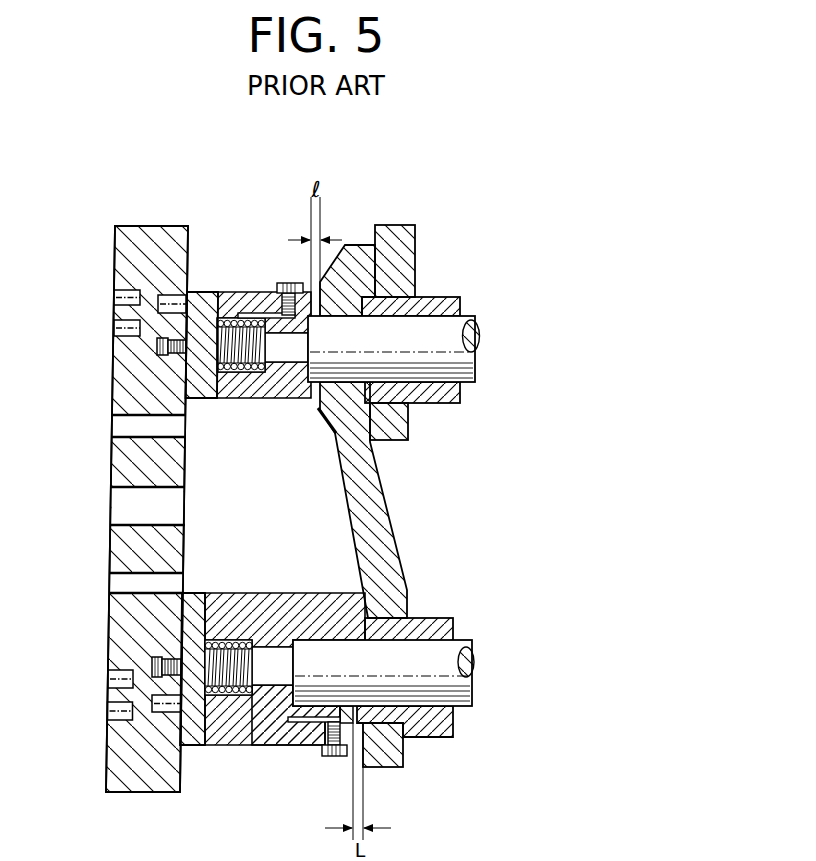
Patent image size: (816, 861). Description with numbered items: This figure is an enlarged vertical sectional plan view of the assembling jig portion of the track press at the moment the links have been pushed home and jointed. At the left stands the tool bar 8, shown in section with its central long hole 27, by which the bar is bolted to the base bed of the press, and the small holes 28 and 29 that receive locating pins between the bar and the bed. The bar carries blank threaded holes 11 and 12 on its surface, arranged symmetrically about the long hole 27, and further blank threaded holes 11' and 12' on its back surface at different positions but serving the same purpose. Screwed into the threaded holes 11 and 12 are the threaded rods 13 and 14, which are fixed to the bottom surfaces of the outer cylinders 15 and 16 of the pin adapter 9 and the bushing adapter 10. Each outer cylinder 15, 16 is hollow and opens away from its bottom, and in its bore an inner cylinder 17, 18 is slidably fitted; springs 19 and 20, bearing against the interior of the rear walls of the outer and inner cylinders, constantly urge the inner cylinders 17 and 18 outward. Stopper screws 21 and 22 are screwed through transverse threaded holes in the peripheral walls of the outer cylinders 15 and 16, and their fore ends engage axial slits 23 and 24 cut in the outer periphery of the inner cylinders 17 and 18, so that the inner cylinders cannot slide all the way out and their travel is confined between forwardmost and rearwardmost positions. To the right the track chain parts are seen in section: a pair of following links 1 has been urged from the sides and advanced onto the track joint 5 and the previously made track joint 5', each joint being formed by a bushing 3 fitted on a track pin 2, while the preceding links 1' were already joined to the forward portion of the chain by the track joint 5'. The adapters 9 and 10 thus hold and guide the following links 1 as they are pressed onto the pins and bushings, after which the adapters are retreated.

The following links 1 is at (381, 484).
The preceding links 1' is at (419, 332).
The track pin 2 is at (448, 347).
The bushing 3 is at (441, 401).
The track joint 5 is at (430, 596).
The track joint 5' is at (448, 300).
The tool bar 8 is at (148, 228).
The pin adapter 9 is at (201, 291).
The bushing adapter 10 is at (205, 588).
The threaded hole 11 is at (132, 345).
The threaded hole 11' is at (90, 313).
The threaded hole 12 is at (125, 665).
The threaded hole 12' is at (87, 695).
The threaded rod 13 is at (157, 345).
The threaded rod 14 is at (158, 663).
The outer cylinder 15 is at (287, 400).
The outer cylinder 16 is at (257, 604).
The inner cylinder 17 is at (259, 378).
The inner cylinder 18 is at (300, 603).
The spring 19 is at (232, 374).
The spring 20 is at (213, 700).
The stopper screw 21 is at (284, 284).
The stopper screw 22 is at (335, 757).
The slit 23 is at (250, 312).
The slit 24 is at (307, 723).
The long hole 27 is at (125, 509).
The small hole 28 is at (125, 422).
The small hole 29 is at (125, 584).